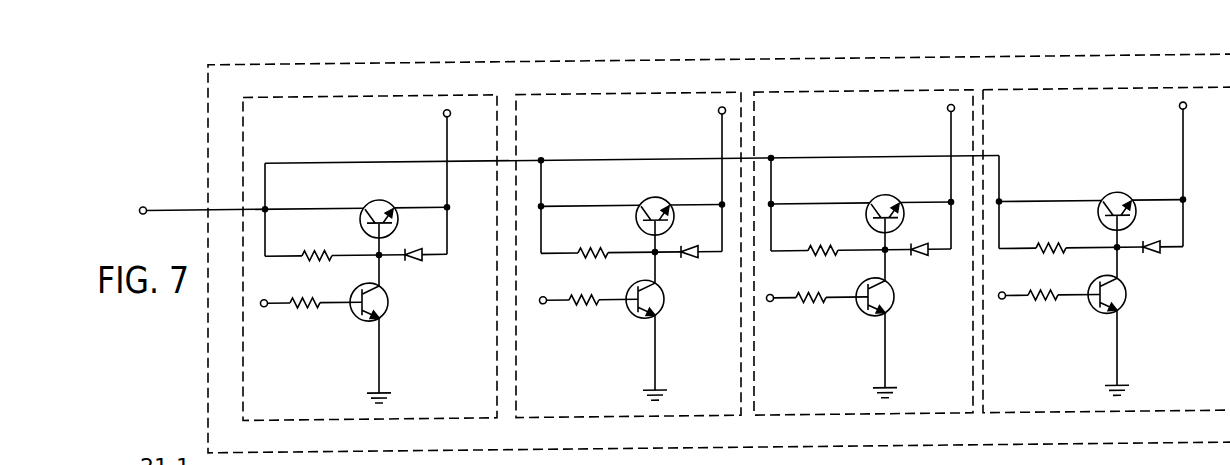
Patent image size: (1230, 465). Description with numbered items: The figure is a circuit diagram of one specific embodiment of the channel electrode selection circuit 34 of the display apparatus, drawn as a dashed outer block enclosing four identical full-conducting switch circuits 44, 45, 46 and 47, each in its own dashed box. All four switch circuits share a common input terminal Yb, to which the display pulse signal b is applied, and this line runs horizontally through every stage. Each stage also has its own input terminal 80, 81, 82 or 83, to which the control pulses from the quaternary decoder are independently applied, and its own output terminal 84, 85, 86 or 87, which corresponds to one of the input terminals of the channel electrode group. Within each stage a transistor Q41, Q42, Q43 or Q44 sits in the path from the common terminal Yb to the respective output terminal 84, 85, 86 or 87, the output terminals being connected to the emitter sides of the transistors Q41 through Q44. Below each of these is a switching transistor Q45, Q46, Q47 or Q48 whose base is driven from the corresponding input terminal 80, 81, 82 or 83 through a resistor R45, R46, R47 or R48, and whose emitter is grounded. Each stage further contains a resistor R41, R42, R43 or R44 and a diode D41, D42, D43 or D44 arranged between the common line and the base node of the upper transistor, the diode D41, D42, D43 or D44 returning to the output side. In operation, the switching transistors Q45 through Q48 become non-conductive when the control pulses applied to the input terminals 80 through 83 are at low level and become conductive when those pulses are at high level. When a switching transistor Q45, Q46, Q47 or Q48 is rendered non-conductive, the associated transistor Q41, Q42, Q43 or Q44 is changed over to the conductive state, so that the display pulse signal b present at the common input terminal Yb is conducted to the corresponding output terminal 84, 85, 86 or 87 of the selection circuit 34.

The channel electrode selection circuit 34 is at (208, 113).
The full-conducting switch circuit 44 is at (345, 100).
The full-conducting switch circuit 45 is at (591, 100).
The full-conducting switch circuit 46 is at (824, 100).
The full-conducting switch circuit 47 is at (1066, 100).
The output terminal 84 is at (443, 119).
The output terminal 85 is at (718, 120).
The output terminal 86 is at (947, 120).
The output terminal 87 is at (1179, 119).
The input terminal 80 is at (262, 311).
The input terminal 81 is at (541, 311).
The input terminal 82 is at (769, 311).
The input terminal 83 is at (1001, 311).
The common input terminal Yb is at (250, 197).
The transistor Q41 is at (383, 205).
The transistor Q42 is at (658, 205).
The transistor Q43 is at (886, 205).
The transistor Q44 is at (1110, 205).
The switching transistor Q45 is at (386, 296).
The switching transistor Q46 is at (662, 296).
The switching transistor Q47 is at (892, 296).
The switching transistor Q48 is at (1124, 296).
The resistor R41 is at (324, 242).
The resistor R42 is at (600, 240).
The resistor R43 is at (827, 237).
The resistor R44 is at (1051, 235).
The resistor R45 is at (315, 289).
The resistor R46 is at (589, 288).
The resistor R47 is at (816, 284).
The resistor R48 is at (1051, 282).
The diode D41 is at (412, 266).
The diode D42 is at (688, 266).
The diode D43 is at (917, 266).
The diode D44 is at (1150, 266).